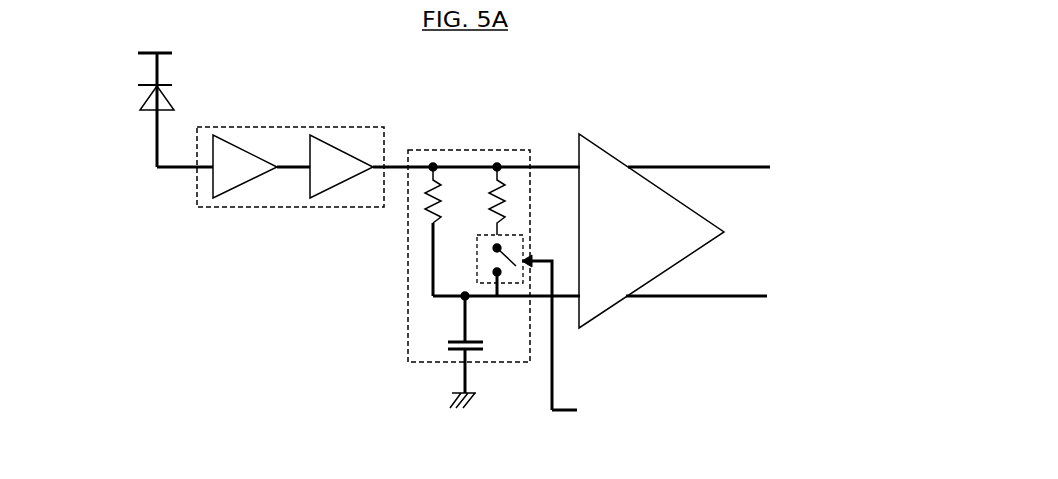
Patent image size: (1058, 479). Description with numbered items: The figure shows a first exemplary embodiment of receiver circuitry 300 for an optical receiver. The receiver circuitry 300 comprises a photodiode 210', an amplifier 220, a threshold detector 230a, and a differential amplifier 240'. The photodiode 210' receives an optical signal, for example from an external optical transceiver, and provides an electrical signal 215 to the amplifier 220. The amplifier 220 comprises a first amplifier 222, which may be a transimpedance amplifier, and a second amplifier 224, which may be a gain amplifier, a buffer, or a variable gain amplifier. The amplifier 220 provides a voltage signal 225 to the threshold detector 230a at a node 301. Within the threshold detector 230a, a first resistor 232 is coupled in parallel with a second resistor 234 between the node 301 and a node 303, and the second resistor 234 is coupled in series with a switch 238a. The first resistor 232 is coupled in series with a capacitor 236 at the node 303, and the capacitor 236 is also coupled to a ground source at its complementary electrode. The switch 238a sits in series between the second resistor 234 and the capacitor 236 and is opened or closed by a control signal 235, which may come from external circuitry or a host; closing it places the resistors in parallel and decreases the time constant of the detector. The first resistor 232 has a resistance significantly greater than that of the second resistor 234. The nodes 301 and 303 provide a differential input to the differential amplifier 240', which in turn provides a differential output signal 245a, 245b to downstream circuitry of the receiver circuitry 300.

The receiver circuitry 300 is at (722, 48).
The photodiode 210' is at (118, 82).
The electrical signal 215 is at (154, 148).
The amplifier 220 is at (240, 127).
The first amplifier 222 is at (231, 191).
The second amplifier 224 is at (331, 142).
The voltage signal 225 is at (398, 162).
The threshold detector 230a is at (518, 149).
The node 301 is at (466, 165).
The first resistor 232 is at (428, 220).
The second resistor 234 is at (510, 200).
The switch 238a is at (477, 265).
The capacitor 236 is at (448, 347).
The node 303 is at (510, 298).
The control signal 235 is at (554, 373).
The differential amplifier 240' is at (687, 231).
The differential output signal 245a is at (736, 165).
The differential output signal 245b is at (736, 299).